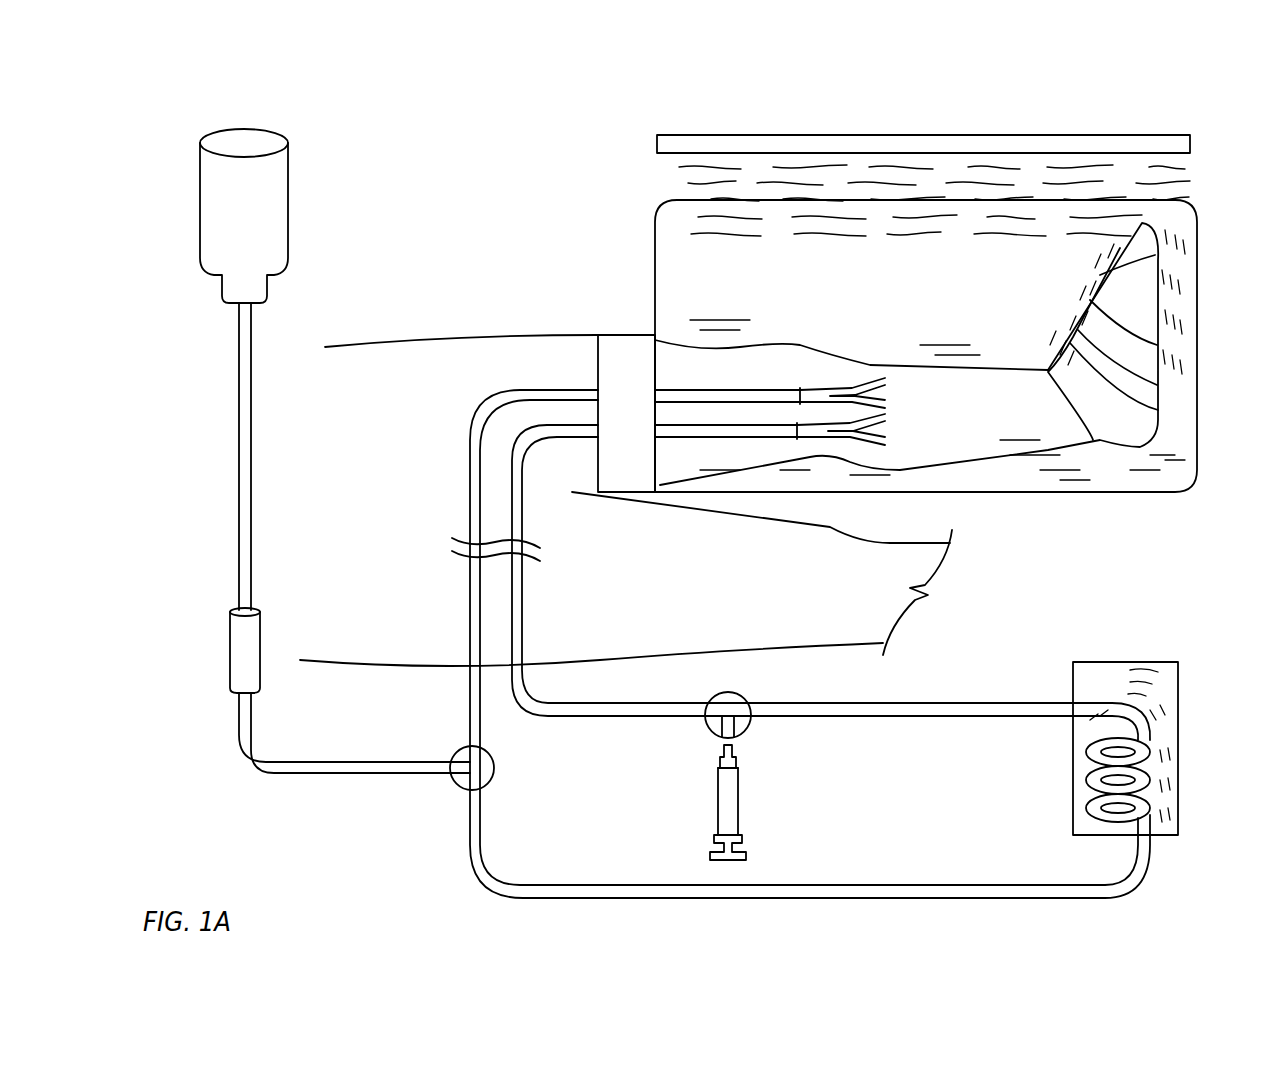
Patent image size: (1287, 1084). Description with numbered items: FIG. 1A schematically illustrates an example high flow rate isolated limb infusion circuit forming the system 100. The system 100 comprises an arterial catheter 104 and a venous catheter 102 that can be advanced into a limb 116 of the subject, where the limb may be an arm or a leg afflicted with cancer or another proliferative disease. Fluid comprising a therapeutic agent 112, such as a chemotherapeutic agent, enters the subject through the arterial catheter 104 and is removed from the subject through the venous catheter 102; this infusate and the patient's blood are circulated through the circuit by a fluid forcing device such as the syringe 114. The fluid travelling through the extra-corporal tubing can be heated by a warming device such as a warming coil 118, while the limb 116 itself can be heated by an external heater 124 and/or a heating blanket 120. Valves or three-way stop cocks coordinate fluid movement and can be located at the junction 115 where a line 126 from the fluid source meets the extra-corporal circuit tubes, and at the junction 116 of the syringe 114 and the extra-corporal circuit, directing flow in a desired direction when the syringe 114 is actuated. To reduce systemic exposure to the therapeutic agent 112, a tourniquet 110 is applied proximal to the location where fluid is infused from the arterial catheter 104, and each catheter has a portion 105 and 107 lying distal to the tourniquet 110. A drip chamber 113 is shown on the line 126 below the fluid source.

The system 100 is at (640, 102).
The venous catheter 102 is at (652, 718).
The arterial catheter 104 is at (473, 452).
The distal portion of arterial catheter 105 is at (752, 400).
The distal portion of venous catheter 107 is at (783, 430).
The tourniquet 110 is at (618, 360).
The therapeutic agent 112 is at (272, 212).
The drip chamber 113 is at (240, 648).
The syringe 114 is at (732, 795).
The junction 115 is at (472, 770).
The limb 116 is at (735, 703).
The warming coil 118 is at (1178, 822).
The heating blanket 120 is at (1062, 257).
The external heater 124 is at (1100, 148).
The line 126 is at (327, 778).